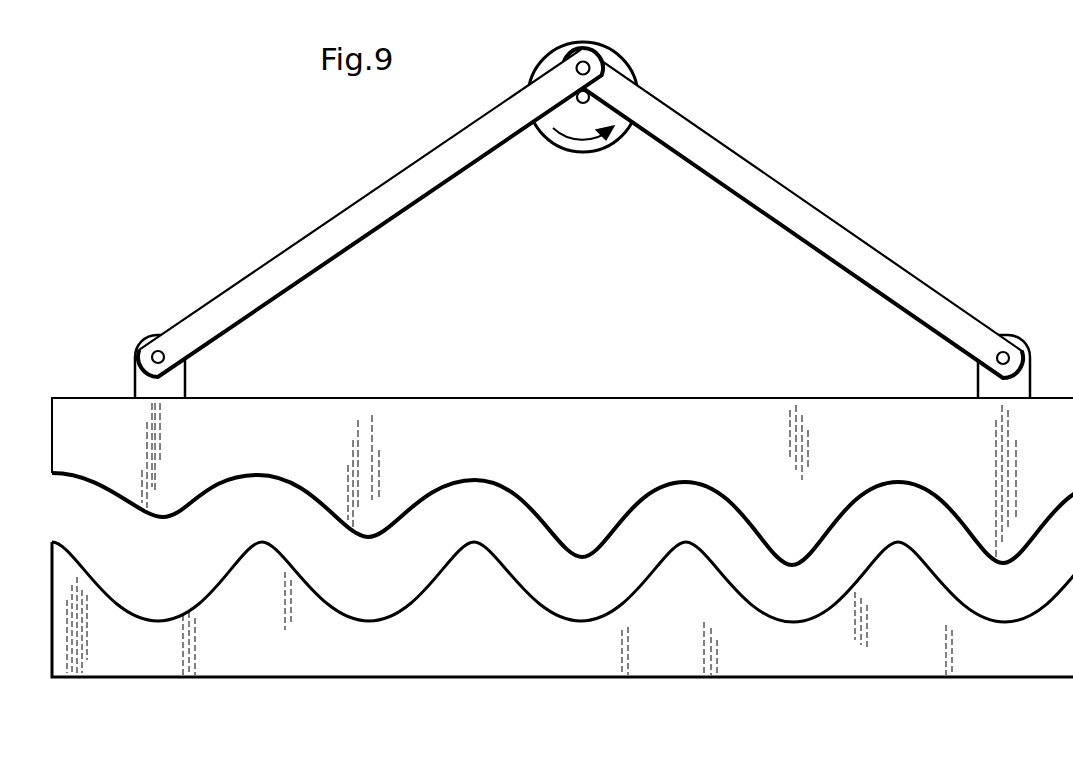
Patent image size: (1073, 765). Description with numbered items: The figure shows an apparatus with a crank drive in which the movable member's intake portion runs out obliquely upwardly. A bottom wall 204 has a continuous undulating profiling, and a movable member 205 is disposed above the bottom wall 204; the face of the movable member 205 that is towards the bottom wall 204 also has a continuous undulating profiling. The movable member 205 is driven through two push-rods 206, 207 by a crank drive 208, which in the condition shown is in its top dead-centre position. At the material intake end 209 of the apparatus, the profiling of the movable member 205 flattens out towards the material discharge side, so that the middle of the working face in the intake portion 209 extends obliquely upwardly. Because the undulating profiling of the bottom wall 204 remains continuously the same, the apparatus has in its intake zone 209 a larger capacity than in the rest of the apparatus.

The bottom wall 204 is at (455, 663).
The movable member 205 is at (552, 412).
The push-rod 206 is at (357, 230).
The push-rod 207 is at (803, 223).
The crank drive 208 is at (617, 54).
The material intake end 209 is at (292, 380).